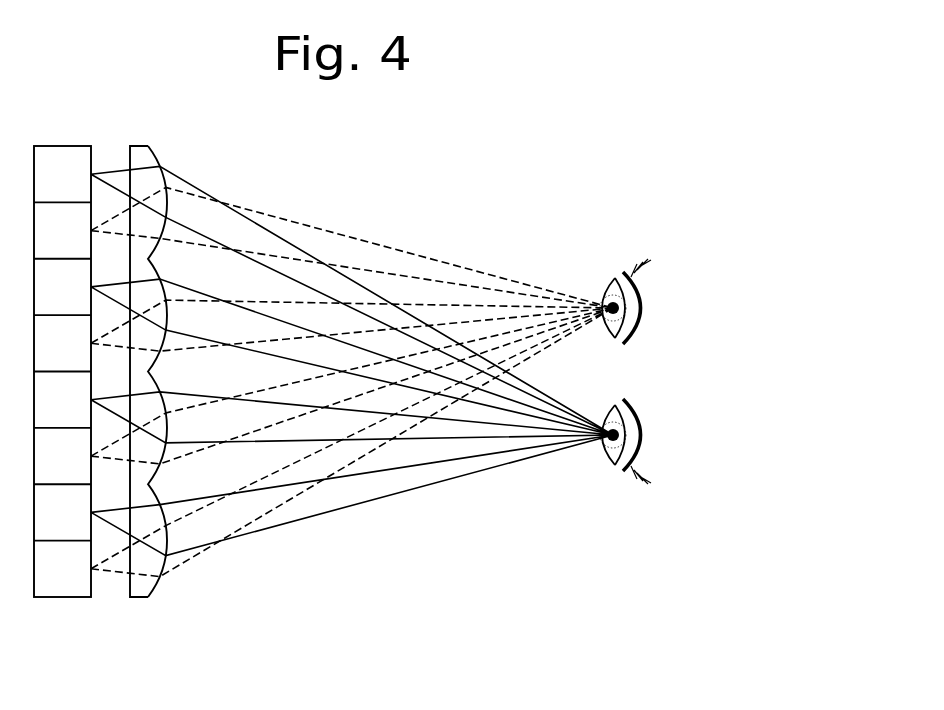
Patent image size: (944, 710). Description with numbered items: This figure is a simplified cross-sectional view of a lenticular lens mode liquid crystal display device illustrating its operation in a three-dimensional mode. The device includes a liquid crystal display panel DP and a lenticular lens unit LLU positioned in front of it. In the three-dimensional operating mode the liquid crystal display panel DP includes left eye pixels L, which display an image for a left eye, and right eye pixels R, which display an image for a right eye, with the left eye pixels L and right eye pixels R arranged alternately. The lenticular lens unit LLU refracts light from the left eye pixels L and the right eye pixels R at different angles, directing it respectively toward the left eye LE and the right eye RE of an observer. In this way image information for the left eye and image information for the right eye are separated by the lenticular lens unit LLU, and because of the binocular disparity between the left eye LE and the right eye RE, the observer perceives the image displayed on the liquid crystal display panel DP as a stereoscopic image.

The liquid crystal display panel DP is at (69, 603).
The lenticular lens unit LLU is at (138, 603).
The left eye LE is at (650, 307).
The right eye RE is at (650, 434).